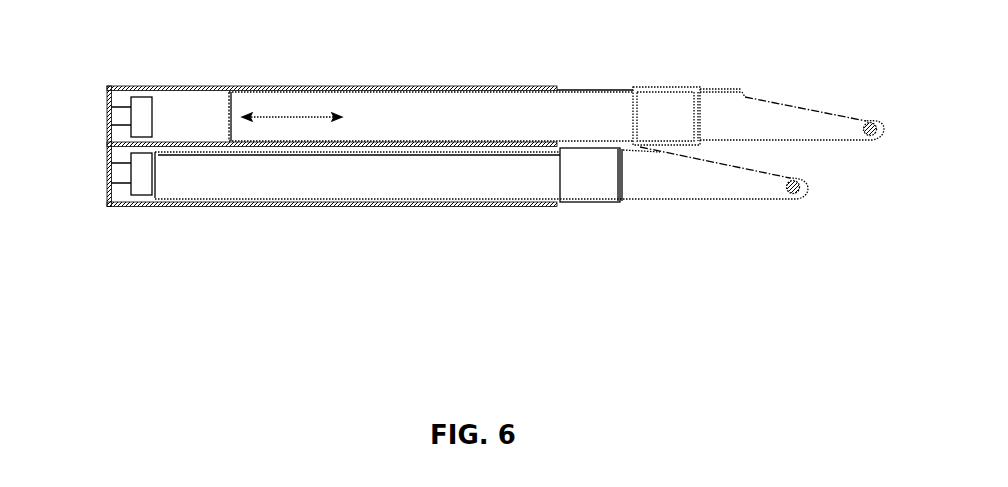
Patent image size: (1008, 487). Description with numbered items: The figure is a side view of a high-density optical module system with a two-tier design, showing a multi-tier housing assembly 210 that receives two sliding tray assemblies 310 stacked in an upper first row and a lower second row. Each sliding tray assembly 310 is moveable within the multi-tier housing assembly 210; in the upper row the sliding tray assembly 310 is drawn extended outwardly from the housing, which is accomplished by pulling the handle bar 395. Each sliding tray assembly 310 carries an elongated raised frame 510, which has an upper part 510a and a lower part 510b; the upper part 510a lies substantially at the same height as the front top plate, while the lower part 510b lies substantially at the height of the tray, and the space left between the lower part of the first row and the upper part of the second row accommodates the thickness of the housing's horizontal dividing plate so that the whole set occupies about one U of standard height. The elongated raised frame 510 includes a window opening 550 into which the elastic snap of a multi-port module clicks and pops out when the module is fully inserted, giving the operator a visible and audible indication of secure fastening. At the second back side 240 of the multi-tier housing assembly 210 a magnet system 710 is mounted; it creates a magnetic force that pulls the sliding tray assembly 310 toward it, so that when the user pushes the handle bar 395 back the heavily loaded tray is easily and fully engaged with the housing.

The second back side 240 is at (97, 88).
The magnet system 710 is at (137, 92).
The multi-tier housing assembly 210 is at (238, 83).
The sliding tray assembly 310 is at (583, 90).
The window opening 550 is at (668, 77).
The upper part 510a is at (707, 85).
The handle bar 395 is at (793, 110).
The lower part 510b is at (702, 147).
The elongated raised frame 510 is at (580, 215).